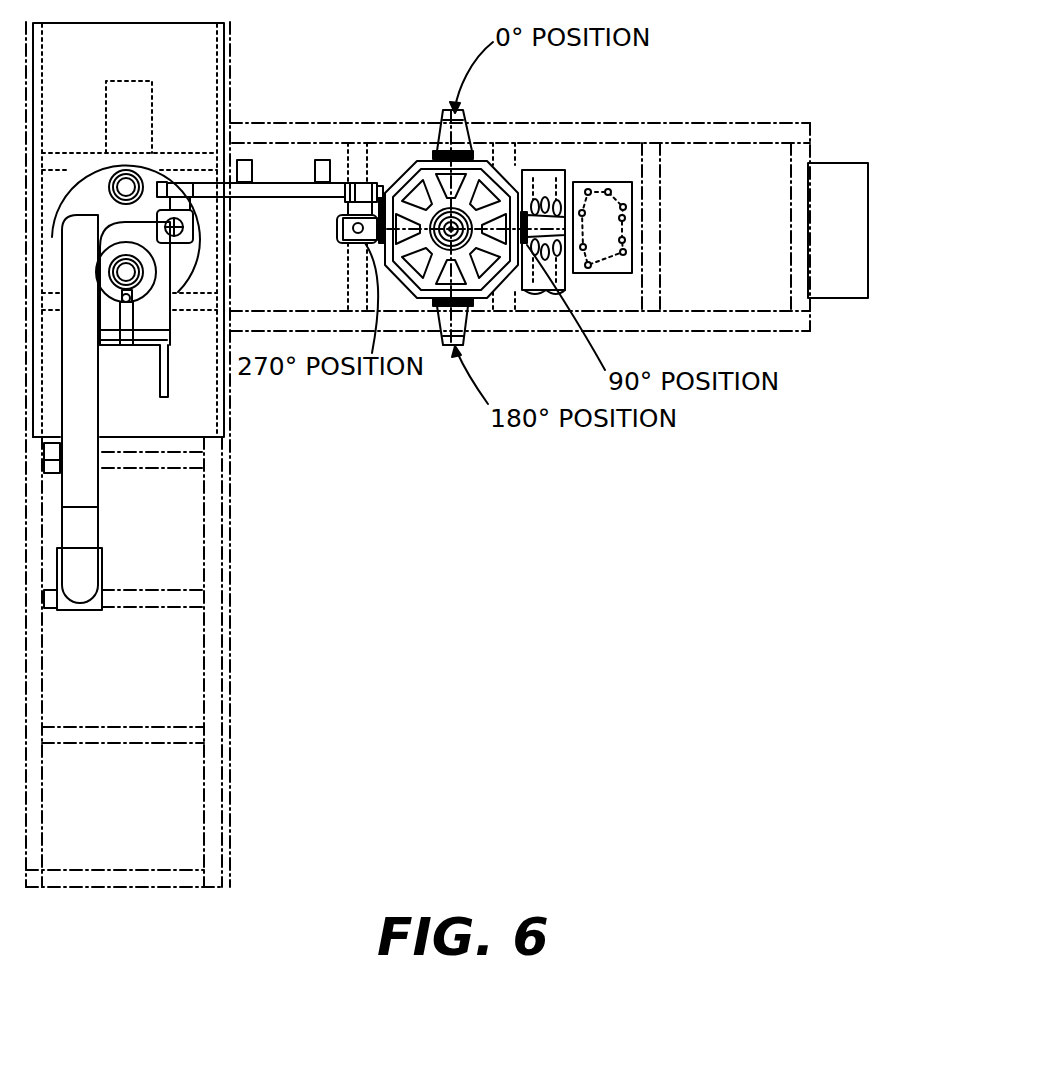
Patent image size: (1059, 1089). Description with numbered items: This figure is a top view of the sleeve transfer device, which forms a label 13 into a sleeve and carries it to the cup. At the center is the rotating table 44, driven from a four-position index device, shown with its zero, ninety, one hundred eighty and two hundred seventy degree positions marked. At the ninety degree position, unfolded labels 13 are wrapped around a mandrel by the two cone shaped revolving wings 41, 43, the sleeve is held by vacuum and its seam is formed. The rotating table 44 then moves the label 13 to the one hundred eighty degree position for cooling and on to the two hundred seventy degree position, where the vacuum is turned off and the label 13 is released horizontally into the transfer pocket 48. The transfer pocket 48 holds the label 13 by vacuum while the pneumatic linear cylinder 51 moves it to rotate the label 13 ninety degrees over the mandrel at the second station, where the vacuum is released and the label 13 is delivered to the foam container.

The label 13 is at (623, 197).
The cone shaped revolving wing 41 is at (585, 222).
The cone shaped revolving wing 43 is at (545, 288).
The rotating table 44 is at (508, 178).
The transfer pocket 48 is at (193, 196).
The pneumatic linear cylinder 51 is at (297, 190).